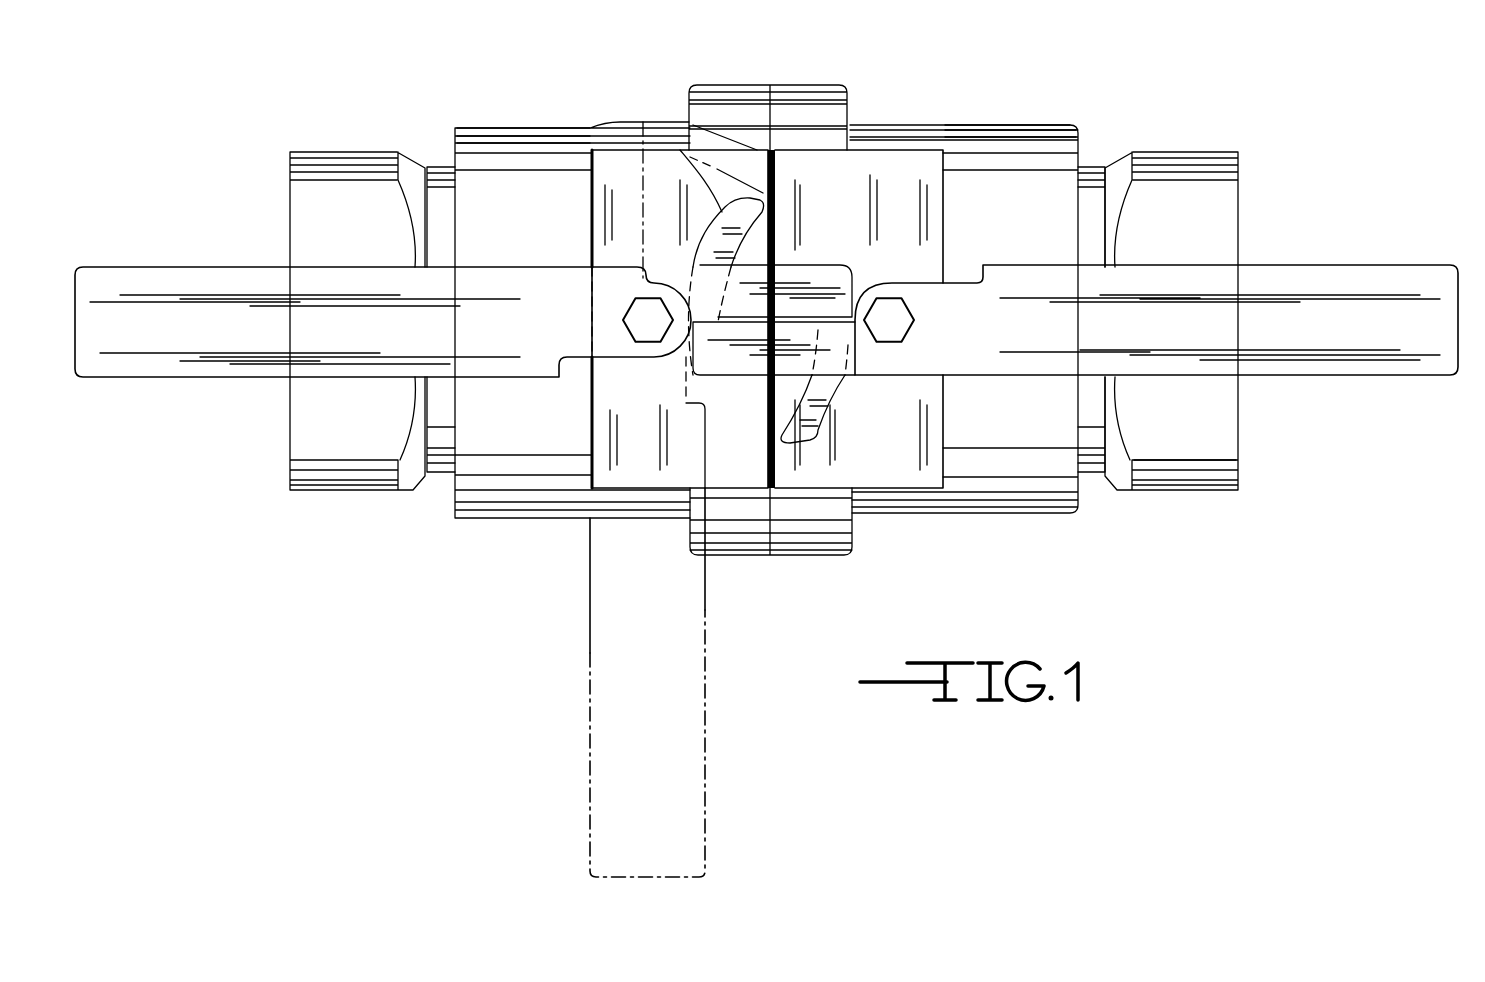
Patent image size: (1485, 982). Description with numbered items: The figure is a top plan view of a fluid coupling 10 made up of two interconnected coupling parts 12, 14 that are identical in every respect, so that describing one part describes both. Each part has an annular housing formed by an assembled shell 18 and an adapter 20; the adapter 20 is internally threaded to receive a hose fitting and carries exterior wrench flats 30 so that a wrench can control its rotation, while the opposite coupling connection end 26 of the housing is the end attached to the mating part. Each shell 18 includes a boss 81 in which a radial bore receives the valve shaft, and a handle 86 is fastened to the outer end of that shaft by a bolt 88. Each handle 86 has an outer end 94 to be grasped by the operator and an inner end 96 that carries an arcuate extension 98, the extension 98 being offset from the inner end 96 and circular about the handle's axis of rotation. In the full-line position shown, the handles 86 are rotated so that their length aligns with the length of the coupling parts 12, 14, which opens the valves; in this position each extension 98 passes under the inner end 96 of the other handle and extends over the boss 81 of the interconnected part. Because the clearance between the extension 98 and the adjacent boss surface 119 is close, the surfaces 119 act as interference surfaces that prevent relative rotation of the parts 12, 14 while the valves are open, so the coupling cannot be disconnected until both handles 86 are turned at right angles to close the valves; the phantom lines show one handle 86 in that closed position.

The coupling 10 is at (787, 636).
The coupling part 12 is at (1042, 522).
The coupling part 14 is at (527, 524).
The shell 18 is at (530, 127).
The adapter 20 is at (347, 492).
The coupling connection end 26 is at (770, 555).
The wrench flats 30 is at (1215, 427).
The boss 81 is at (748, 478).
The handle 86 is at (247, 378).
The bolt 88 is at (648, 320).
The outer end 94 is at (160, 267).
The inner end 96 is at (807, 278).
The arcuate extension 98 is at (680, 150).
The boss surface 119 is at (630, 412).